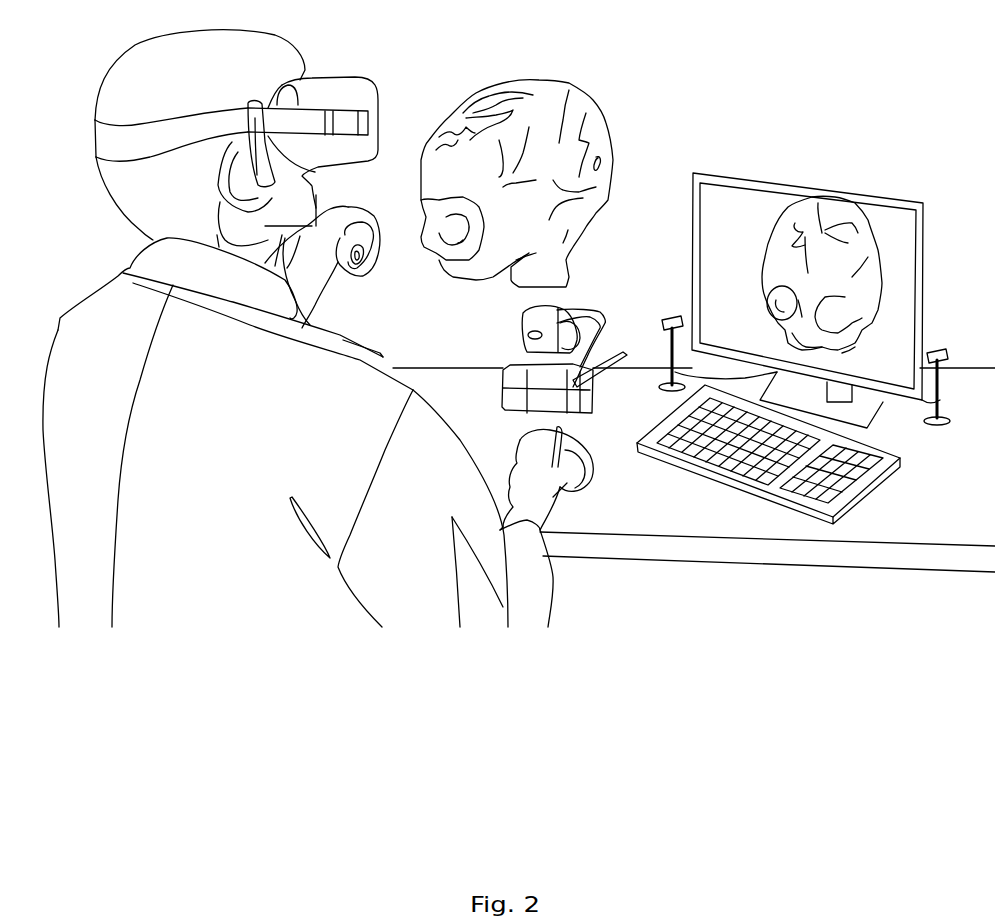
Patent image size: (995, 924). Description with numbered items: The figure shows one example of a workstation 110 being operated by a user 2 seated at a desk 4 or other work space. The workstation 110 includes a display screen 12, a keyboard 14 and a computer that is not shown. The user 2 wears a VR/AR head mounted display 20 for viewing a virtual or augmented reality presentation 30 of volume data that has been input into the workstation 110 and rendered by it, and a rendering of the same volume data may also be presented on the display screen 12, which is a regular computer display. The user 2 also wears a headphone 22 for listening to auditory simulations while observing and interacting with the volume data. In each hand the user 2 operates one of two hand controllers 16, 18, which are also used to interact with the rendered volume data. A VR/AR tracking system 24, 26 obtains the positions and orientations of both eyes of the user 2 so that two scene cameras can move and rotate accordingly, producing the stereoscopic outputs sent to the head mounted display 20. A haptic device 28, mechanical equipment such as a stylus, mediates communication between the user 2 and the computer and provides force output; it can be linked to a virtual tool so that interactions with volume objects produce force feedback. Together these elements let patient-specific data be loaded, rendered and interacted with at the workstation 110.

The user 2 is at (230, 560).
The desk 4 is at (478, 398).
The display screen 12 is at (874, 277).
The keyboard 14 is at (860, 487).
The hand controller 16 is at (590, 480).
The hand controller 18 is at (333, 268).
The VR/AR head mounted display 20 is at (308, 118).
The headphone 22 is at (242, 170).
The VR/AR tracking system 24 is at (670, 317).
The VR/AR tracking system 26 is at (940, 350).
The haptic device 28 is at (525, 328).
The virtual or augmented reality presentation 30 is at (476, 150).
The workstation 110 is at (793, 170).